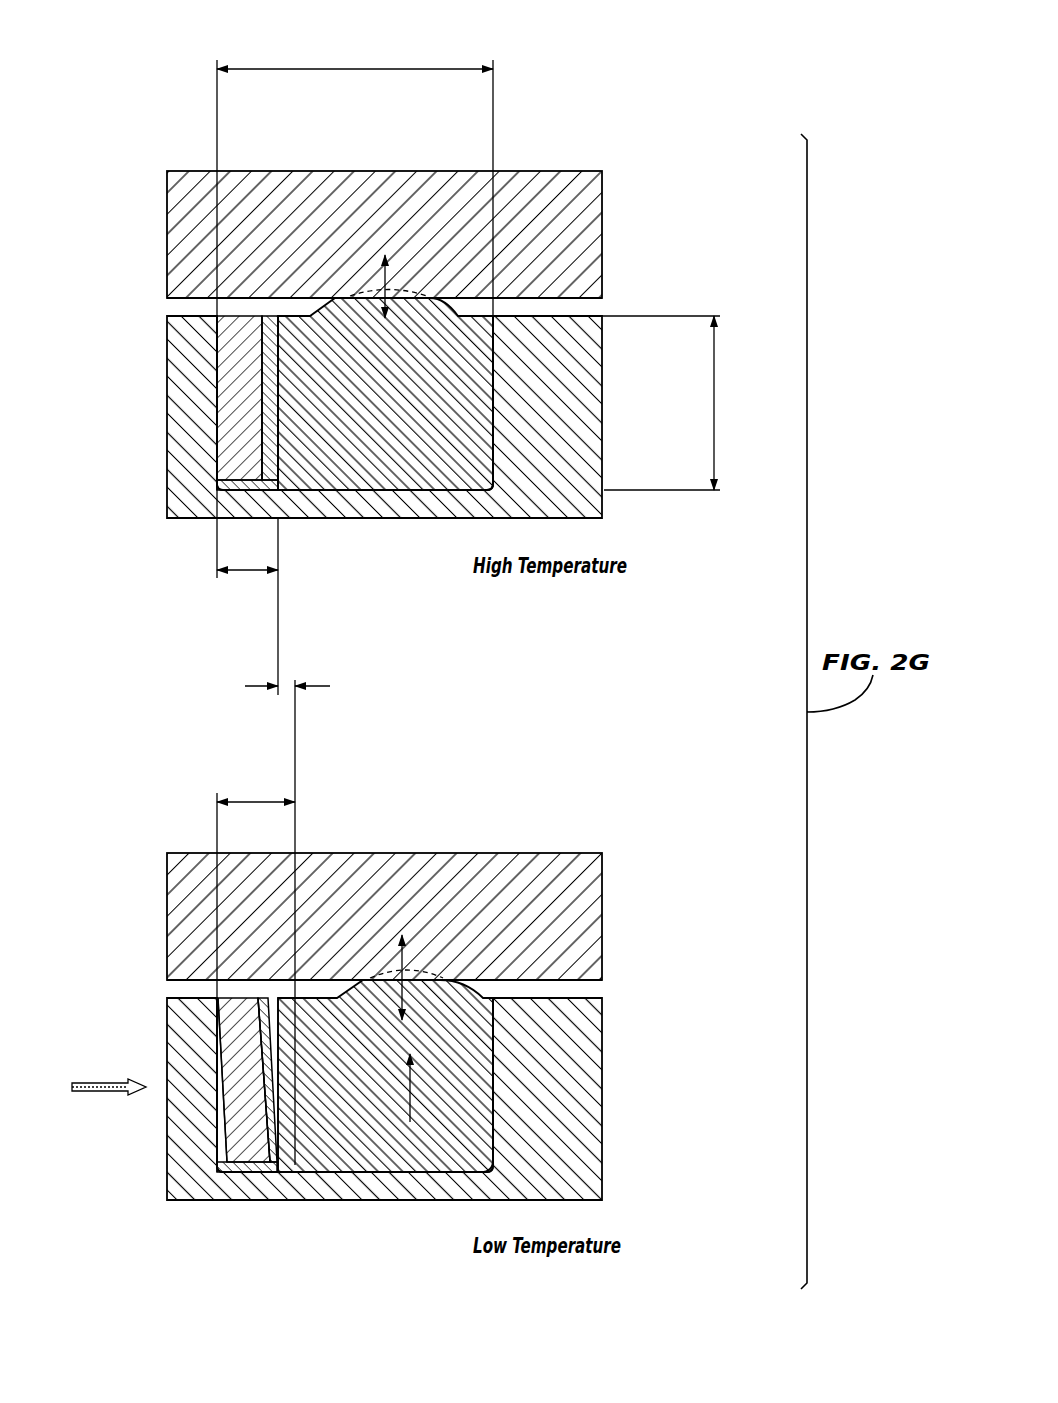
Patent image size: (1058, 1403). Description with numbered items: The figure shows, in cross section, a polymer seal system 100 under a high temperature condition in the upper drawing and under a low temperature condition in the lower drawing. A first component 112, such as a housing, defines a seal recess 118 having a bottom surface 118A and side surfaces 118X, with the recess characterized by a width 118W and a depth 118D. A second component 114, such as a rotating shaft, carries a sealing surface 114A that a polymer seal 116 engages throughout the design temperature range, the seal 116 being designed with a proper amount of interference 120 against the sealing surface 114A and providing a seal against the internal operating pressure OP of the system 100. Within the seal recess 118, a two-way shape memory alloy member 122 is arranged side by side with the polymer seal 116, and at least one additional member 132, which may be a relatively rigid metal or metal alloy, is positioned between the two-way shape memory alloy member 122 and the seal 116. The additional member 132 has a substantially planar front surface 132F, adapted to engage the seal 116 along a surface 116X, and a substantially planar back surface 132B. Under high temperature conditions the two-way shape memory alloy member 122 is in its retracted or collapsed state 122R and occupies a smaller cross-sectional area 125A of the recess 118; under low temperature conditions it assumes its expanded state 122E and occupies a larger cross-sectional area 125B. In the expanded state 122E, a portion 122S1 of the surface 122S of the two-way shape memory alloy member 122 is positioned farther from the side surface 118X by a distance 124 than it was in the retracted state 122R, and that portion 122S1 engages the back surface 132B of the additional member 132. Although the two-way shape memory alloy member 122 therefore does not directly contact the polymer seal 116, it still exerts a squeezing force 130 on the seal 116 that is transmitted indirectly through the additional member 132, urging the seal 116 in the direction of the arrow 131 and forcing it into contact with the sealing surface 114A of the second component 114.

The system 100 is at (133, 183).
The first component 112 is at (597, 407).
The second component 114 is at (596, 212).
The sealing surface 114A is at (538, 300).
The polymer seal 116 is at (467, 368).
The side surface of thermal interface material 116X is at (282, 414).
The seal recess 118 is at (415, 494).
The bottom surface 118A is at (370, 492).
The depth 118D is at (716, 427).
The width 118W is at (328, 65).
The side surfaces 118X is at (218, 404).
The interference 120 is at (383, 268).
The two-way shape memory alloy member 122 is at (258, 440).
The expanded shape or size 122E is at (237, 1040).
The retracted or collapsed shape or state 122R is at (232, 372).
The surface of the TWSMA member 122S is at (262, 466).
The portion of the surface 122S1 is at (291, 1095).
The distance 124 is at (286, 684).
The smaller cross-sectional area 125A is at (248, 572).
The larger cross-sectional area 125B is at (256, 798).
The force 130 is at (92, 1093).
The arrow 131 is at (420, 1092).
The additional member 132 is at (262, 348).
The back surface 132B is at (258, 490).
The front surface 132F is at (308, 482).
The operating pressure OP is at (208, 310).